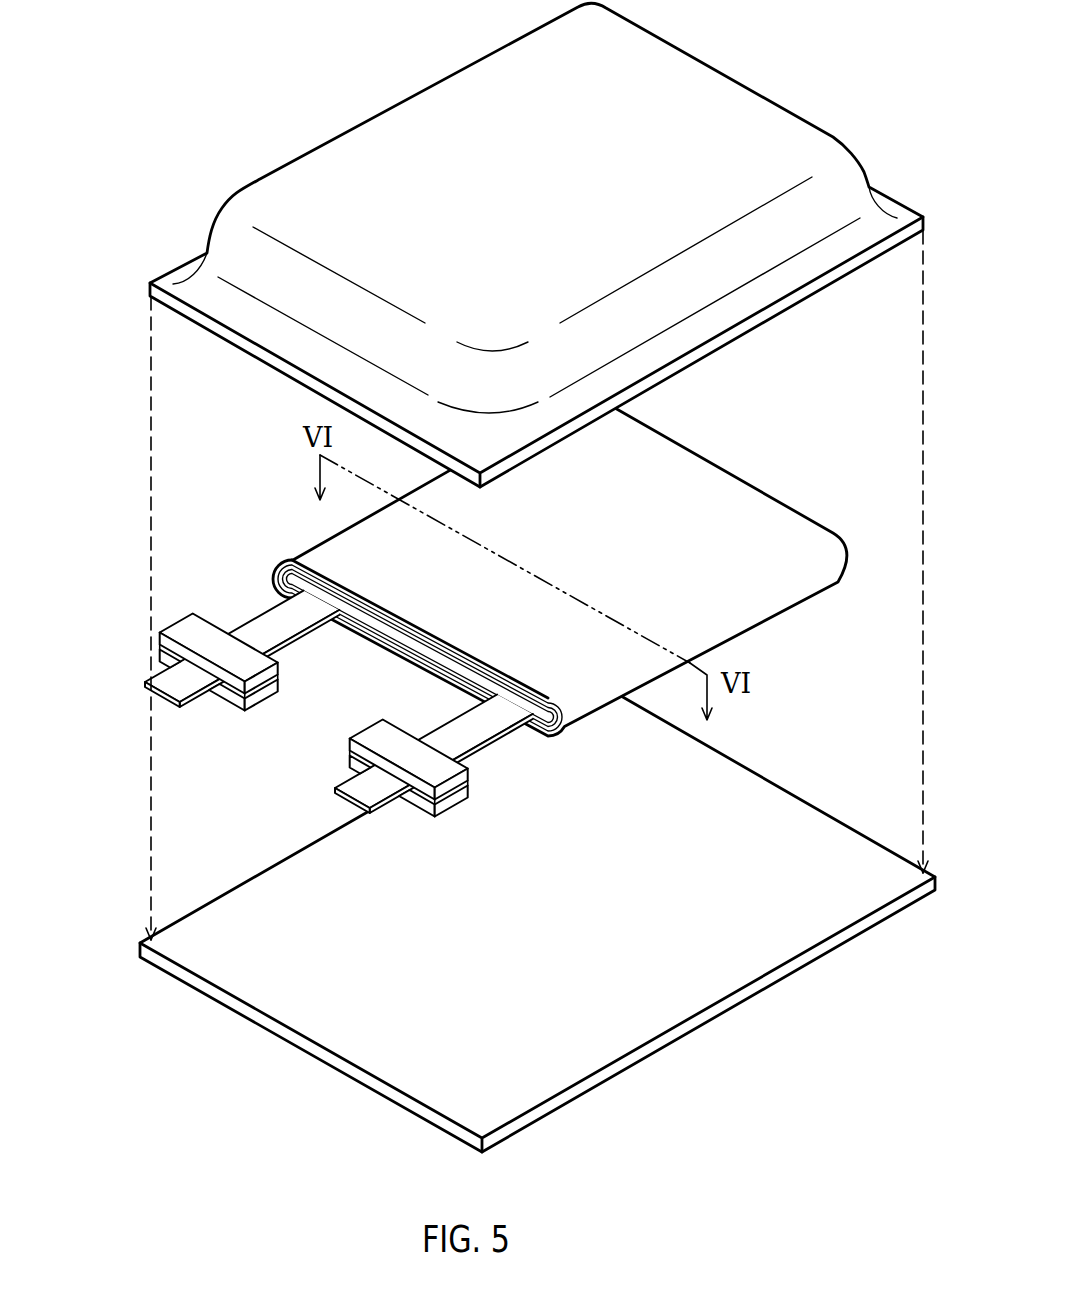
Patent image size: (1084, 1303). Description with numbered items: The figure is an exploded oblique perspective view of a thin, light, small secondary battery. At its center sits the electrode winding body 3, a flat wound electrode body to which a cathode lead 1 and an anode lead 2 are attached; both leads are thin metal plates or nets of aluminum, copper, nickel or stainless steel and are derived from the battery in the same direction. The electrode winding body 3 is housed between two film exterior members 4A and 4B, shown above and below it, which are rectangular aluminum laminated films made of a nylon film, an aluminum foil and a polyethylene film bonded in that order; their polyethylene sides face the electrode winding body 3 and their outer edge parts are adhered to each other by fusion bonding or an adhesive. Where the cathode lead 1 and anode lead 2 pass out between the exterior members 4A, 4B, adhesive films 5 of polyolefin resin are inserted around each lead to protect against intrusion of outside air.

The cathode lead 1 is at (162, 680).
The anode lead 2 is at (350, 780).
The electrode winding body 3 is at (657, 460).
The exterior member 4A is at (707, 89).
The exterior member 4B is at (783, 812).
The adhesive film 5 is at (378, 738).